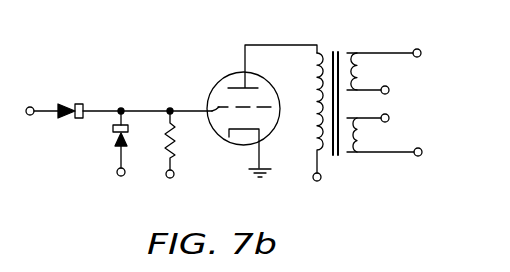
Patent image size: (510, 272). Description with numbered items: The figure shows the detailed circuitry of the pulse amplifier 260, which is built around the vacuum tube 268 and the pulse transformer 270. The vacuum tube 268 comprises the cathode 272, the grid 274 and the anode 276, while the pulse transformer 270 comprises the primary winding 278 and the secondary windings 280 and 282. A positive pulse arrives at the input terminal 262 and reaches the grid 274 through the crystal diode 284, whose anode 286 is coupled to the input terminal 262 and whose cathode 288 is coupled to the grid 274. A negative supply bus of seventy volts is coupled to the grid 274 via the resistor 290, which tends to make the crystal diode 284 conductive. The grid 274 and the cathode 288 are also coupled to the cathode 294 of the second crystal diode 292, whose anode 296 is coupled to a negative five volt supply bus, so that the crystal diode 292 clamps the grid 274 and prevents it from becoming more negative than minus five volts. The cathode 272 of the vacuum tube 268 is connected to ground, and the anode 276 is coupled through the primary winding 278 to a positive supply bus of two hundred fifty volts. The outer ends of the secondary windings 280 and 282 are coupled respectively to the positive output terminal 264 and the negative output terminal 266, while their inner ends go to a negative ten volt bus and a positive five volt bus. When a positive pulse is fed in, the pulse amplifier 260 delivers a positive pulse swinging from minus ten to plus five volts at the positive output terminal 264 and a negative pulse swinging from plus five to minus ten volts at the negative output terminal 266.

The pulse amplifier 260 is at (357, 228).
The input terminal 262 is at (35, 124).
The positive output terminal 264 is at (416, 49).
The negative output terminal 266 is at (418, 156).
The vacuum tube 268 is at (240, 112).
The pulse transformer 270 is at (354, 111).
The cathode 272 is at (258, 150).
The grid 274 is at (209, 101).
The anode 276 is at (251, 72).
The primary winding 278 is at (316, 112).
The secondary winding 280 is at (386, 60).
The secondary winding 282 is at (387, 145).
The crystal diode 284 is at (74, 94).
The anode 286 is at (61, 105).
The cathode 288 is at (95, 93).
The resistor 290 is at (175, 145).
The crystal diode 292 is at (93, 139).
The cathode 294 is at (113, 128).
The anode 296 is at (117, 162).